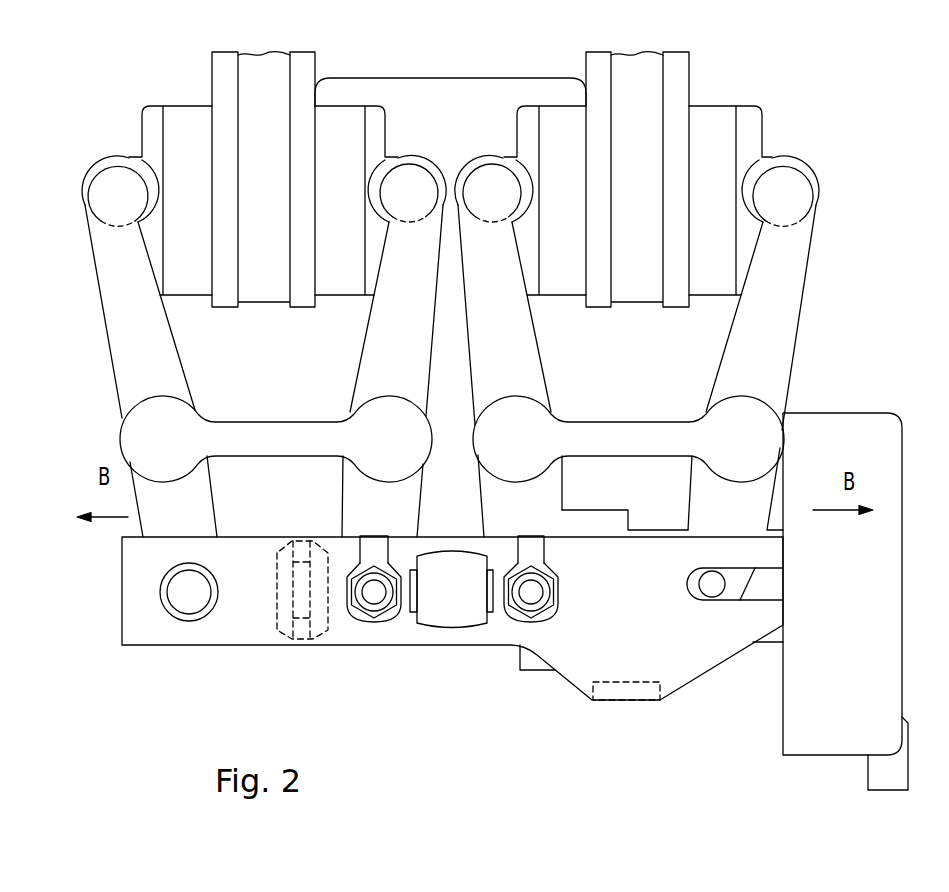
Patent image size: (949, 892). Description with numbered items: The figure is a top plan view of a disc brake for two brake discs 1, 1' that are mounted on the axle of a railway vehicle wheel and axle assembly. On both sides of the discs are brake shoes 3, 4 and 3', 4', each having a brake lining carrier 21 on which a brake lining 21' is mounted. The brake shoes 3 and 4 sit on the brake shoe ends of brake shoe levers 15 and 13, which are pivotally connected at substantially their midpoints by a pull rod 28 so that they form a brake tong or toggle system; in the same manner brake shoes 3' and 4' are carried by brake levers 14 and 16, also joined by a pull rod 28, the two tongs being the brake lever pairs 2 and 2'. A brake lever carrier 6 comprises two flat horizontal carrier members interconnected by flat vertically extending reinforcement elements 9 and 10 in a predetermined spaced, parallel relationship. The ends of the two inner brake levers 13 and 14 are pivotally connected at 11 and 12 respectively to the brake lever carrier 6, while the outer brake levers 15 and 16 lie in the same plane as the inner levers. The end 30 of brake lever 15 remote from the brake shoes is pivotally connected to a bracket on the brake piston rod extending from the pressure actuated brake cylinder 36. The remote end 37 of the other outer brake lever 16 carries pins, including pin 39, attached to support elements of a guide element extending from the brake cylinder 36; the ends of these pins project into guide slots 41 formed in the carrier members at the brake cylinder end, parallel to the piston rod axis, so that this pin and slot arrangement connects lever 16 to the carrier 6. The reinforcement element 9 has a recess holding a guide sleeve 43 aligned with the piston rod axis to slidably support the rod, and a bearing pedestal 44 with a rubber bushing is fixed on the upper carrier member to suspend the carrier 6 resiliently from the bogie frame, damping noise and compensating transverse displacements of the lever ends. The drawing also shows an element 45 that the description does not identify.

The brake disc 1 is at (263, 196).
The brake disc 1' is at (637, 195).
The brake lever pair 2 is at (276, 408).
The brake lever pair 2' is at (628, 408).
The brake shoe 3 is at (135, 336).
The brake shoe 3' is at (494, 177).
The brake shoe 4 is at (407, 178).
The brake shoe 4' is at (762, 288).
The brake lever carrier 6 is at (413, 662).
The reinforcement element 9 is at (302, 633).
The reinforcement element 10 is at (632, 690).
The pivot connection 11 is at (358, 634).
The pivot connection 12 is at (532, 646).
The brake shoe lever 13 is at (339, 377).
The brake lever 14 is at (566, 378).
The brake shoe lever 15 is at (233, 519).
The brake lever 16 is at (675, 502).
The brake lining carrier 21 is at (461, 188).
The brake lining 21' is at (452, 79).
The pull rod 28 is at (312, 447).
The end of brake lever 30 is at (191, 634).
The brake cylinder 36 is at (845, 418).
The remote end of brake lever 37 is at (703, 619).
The pin 39 is at (715, 590).
The guide slot 41 is at (757, 568).
The guide sleeve 43 is at (285, 620).
The bearing pedestal 44 is at (449, 646).
The tab 45 is at (493, 603).